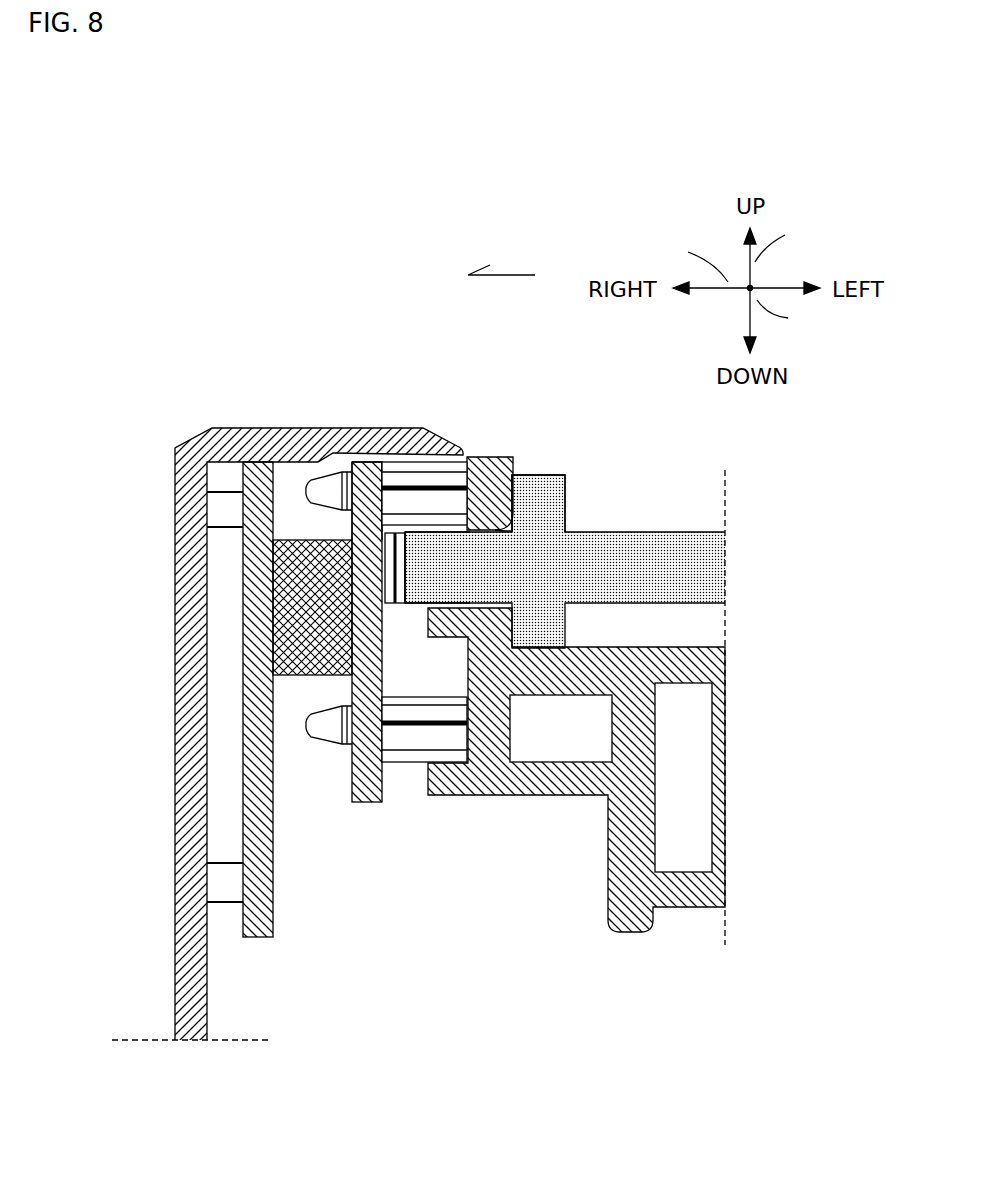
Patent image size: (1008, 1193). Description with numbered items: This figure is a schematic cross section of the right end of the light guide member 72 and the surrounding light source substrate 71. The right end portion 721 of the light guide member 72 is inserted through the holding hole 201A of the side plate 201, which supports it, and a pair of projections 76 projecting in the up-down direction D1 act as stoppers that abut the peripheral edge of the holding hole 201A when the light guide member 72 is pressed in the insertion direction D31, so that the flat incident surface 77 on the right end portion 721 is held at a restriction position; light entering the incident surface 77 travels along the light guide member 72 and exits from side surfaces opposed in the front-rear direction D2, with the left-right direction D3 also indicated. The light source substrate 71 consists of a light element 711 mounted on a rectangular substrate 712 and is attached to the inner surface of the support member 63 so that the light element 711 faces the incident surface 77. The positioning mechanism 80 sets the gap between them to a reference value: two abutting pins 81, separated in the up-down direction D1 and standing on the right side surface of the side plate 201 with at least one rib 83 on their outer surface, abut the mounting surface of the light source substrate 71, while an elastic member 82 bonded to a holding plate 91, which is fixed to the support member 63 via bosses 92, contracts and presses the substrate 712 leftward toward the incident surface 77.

The support member 63 is at (158, 392).
The holding plate 91 is at (255, 462).
The bosses 92 is at (225, 512).
The elastic member 82 is at (270, 593).
The light source substrate 71 is at (366, 818).
The substrate 712 is at (355, 462).
The light element 711 is at (398, 605).
The light guide member 72 is at (648, 532).
The side plate 201 is at (487, 457).
The holding hole 201A is at (520, 528).
The incident surface 77 is at (403, 552).
The right end portion 721 is at (473, 470).
The projections 76 is at (540, 475).
The abutting pins 81 is at (400, 470).
The rib 83 is at (432, 528).
The positioning mechanism 80 is at (305, 768).
The insertion direction D31 is at (510, 273).
The up-down direction D1 is at (783, 236).
The front-rear direction D2 is at (790, 318).
The left-right direction D3 is at (689, 260).